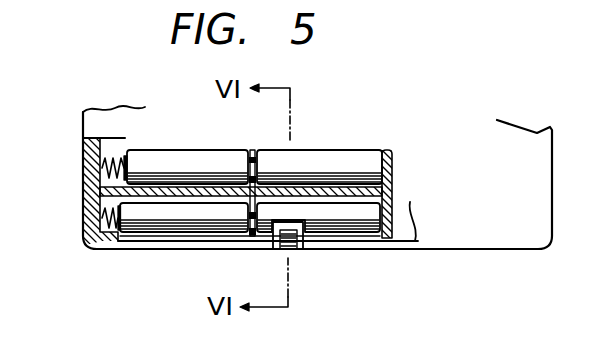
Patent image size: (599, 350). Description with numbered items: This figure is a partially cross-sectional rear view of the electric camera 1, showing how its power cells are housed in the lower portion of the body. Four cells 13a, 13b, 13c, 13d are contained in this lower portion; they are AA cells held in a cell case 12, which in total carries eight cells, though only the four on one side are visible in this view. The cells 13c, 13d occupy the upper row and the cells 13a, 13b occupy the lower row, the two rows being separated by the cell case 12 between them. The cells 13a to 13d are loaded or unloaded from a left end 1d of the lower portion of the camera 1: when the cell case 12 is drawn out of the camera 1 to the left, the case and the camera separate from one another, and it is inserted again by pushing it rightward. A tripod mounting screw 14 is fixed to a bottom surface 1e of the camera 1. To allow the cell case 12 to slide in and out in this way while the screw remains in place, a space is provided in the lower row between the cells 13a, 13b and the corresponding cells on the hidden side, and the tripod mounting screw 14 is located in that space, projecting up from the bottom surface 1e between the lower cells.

The camera 1 is at (462, 258).
The left end 1d is at (83, 112).
The bottom surface 1e is at (198, 245).
The cell case 12 is at (100, 192).
The cell 13a is at (360, 230).
The cell 13b is at (158, 208).
The cell 13c is at (184, 160).
The cell 13d is at (348, 157).
The tripod mounting screw 14 is at (290, 255).